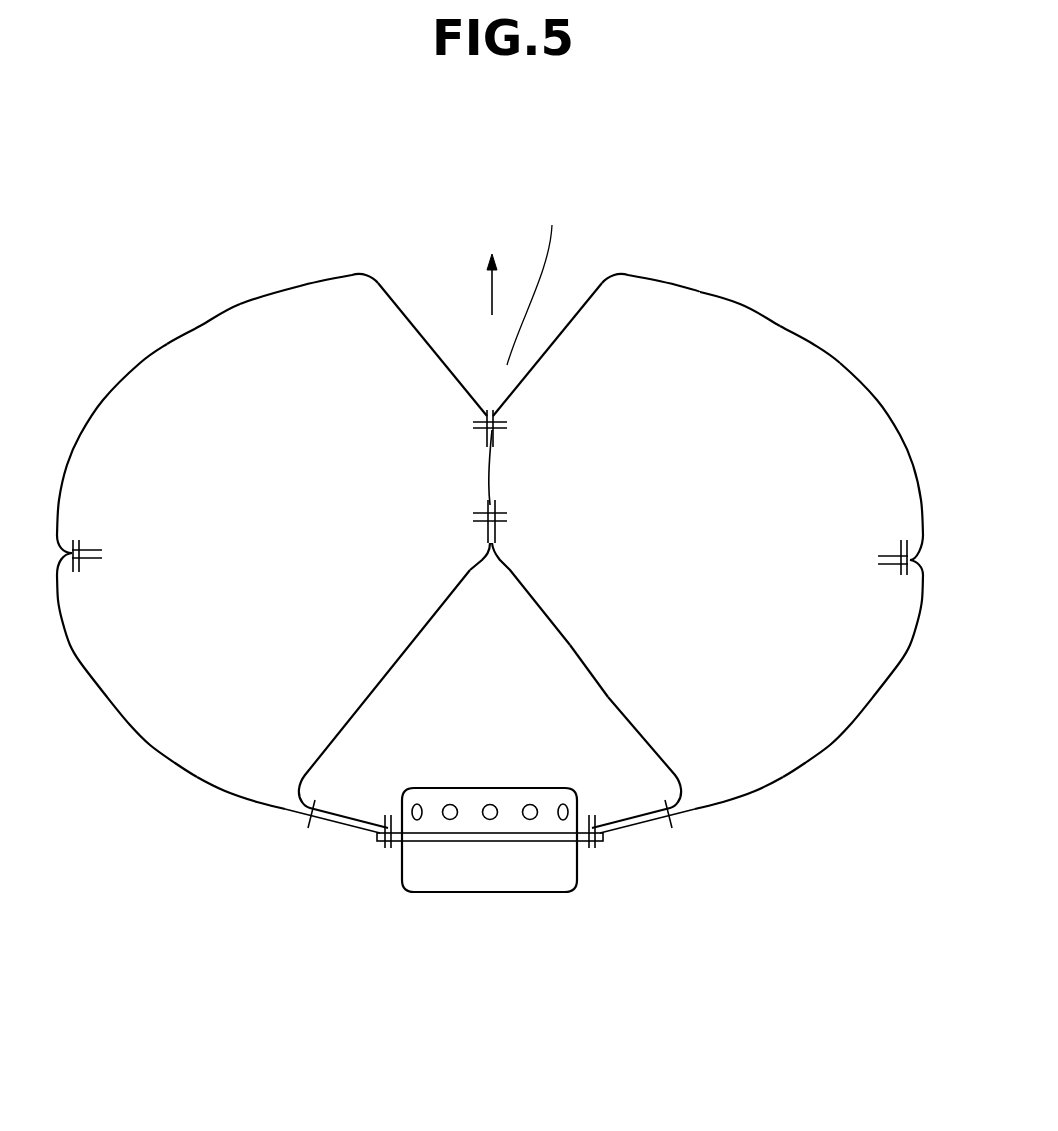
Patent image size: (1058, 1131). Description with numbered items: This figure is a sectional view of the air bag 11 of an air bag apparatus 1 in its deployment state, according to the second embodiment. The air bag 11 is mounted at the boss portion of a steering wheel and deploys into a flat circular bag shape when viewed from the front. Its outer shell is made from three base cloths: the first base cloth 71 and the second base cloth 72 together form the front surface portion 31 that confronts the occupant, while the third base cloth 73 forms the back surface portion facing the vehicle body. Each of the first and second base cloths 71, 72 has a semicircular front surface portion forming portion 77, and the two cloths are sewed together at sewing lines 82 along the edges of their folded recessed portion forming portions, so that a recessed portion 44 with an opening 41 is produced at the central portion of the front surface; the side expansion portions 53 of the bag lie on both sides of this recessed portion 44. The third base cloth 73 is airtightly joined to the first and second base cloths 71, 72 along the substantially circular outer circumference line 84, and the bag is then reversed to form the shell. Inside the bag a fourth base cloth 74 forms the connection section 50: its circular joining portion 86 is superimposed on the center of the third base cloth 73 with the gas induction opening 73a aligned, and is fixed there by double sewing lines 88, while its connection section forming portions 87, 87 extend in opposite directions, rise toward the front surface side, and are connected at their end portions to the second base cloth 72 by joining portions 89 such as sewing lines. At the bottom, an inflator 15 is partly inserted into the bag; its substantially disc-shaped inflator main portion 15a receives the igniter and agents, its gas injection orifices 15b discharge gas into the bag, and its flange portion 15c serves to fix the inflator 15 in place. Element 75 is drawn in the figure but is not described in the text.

The air bag apparatus 1 is at (842, 232).
The air bag 11 is at (742, 304).
The inflator 15 is at (568, 884).
The inflator main portion 15a is at (488, 880).
The gas injection orifices 15b is at (450, 804).
The flange portion 15c is at (385, 850).
The front surface portion 31 is at (335, 267).
The opening 41 is at (575, 292).
The recessed portion 44 is at (539, 278).
The connection section 50 is at (548, 608).
The side expansion portions 53 is at (140, 355).
The first base cloth 71 is at (262, 296).
The second base cloth 72 is at (696, 291).
The third base cloth 73 is at (197, 778).
The gas induction opening 73a is at (588, 822).
The fourth base cloth 74 is at (572, 648).
The lower edge portion 75 is at (258, 804).
The front surface portion forming portions 77 is at (185, 332).
The sewing lines 82 is at (505, 424).
The outer circumference line 84 is at (78, 576).
The joining portion 86 is at (638, 824).
The connection section forming portions 87 is at (418, 640).
The double sewing lines 88 is at (507, 460).
The joining portions 89 is at (505, 515).